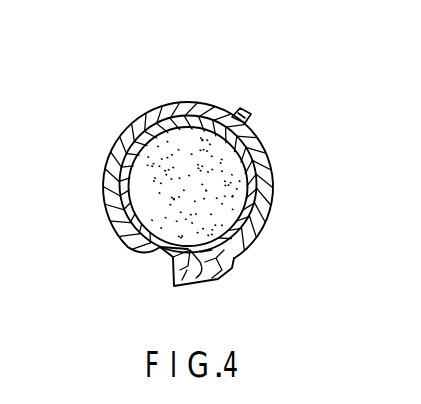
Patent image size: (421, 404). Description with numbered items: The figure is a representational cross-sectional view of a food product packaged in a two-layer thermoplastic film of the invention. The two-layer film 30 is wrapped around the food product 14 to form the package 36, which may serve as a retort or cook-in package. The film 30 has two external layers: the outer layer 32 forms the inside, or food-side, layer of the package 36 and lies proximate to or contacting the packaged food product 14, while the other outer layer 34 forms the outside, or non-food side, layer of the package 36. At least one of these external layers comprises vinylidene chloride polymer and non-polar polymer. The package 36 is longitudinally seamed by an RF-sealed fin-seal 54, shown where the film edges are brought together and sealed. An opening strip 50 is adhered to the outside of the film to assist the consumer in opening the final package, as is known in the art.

The food product 14 is at (168, 196).
The two-layer film 30 is at (113, 142).
The outer layer 32 is at (248, 196).
The outer layer 34 is at (266, 152).
The package 36 is at (185, 91).
The opening strip 50 is at (241, 110).
The RF-sealed fin-seal 54 is at (203, 287).